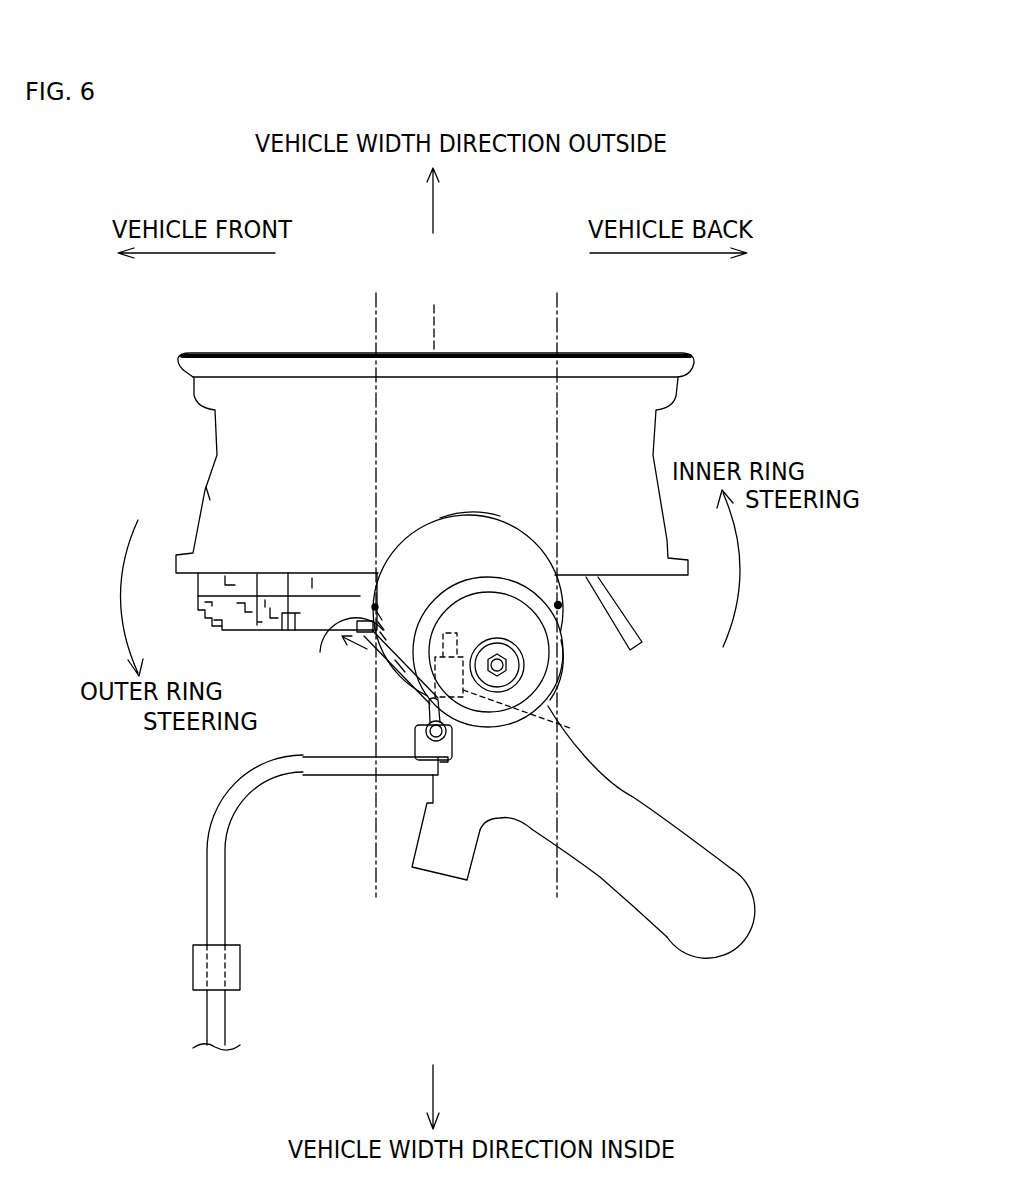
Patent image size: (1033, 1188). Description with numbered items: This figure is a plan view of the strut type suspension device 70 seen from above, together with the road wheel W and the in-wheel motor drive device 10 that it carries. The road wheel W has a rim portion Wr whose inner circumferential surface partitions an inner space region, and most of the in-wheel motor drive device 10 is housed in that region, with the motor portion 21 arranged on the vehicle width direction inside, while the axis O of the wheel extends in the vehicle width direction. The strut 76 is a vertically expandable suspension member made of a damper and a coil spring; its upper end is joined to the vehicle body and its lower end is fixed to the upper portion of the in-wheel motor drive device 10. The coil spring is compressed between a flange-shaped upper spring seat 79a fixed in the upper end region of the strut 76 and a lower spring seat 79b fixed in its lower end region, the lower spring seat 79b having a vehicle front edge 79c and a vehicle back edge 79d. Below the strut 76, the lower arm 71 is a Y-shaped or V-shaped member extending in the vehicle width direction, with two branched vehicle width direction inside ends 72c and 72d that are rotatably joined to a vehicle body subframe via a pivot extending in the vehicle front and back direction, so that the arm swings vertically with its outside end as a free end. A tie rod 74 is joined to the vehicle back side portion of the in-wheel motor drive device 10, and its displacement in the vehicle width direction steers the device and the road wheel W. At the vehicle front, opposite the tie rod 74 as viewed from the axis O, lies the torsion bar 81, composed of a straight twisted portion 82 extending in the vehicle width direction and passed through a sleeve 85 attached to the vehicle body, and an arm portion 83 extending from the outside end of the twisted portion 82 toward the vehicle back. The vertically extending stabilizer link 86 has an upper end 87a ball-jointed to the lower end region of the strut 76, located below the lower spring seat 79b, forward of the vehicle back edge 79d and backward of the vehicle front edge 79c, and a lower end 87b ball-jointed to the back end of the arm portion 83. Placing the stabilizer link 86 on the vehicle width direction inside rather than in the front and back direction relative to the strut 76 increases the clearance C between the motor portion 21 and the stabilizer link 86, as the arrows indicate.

The road wheel W is at (279, 337).
The rim portion Wr is at (220, 492).
The axis O is at (435, 317).
The in-wheel motor drive device 10 is at (284, 661).
The motor portion 21 is at (233, 626).
The suspension device 70 is at (707, 732).
The lower arm 71 is at (704, 826).
The vehicle width direction inside end 72c is at (441, 868).
The vehicle width direction inside end 72d is at (748, 930).
The tie rod 74 is at (634, 622).
The strut 76 is at (518, 513).
The upper spring seat 79a is at (545, 667).
The lower spring seat 79b is at (450, 530).
The vehicle front edge 79c is at (370, 654).
The vehicle back edge 79d is at (560, 608).
The torsion bar 81 is at (191, 908).
The twisted portion 82 is at (213, 1017).
The arm portion 83 is at (346, 767).
The sleeve 85 is at (195, 968).
The stabilizer link 86 is at (416, 717).
The upper end 87a is at (570, 728).
The lower end 87b is at (418, 745).
The clearance C is at (392, 681).